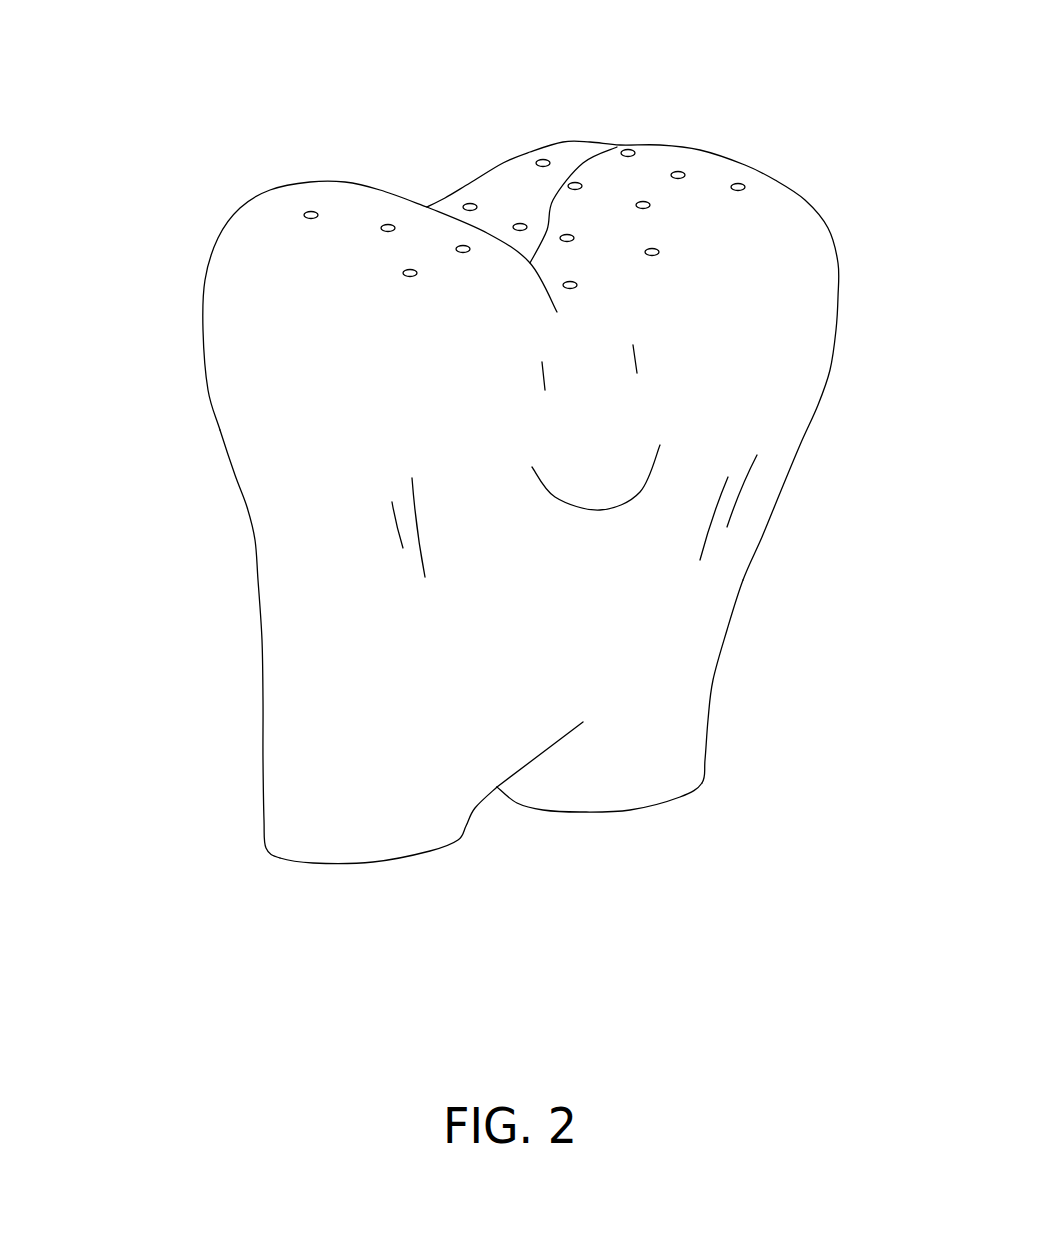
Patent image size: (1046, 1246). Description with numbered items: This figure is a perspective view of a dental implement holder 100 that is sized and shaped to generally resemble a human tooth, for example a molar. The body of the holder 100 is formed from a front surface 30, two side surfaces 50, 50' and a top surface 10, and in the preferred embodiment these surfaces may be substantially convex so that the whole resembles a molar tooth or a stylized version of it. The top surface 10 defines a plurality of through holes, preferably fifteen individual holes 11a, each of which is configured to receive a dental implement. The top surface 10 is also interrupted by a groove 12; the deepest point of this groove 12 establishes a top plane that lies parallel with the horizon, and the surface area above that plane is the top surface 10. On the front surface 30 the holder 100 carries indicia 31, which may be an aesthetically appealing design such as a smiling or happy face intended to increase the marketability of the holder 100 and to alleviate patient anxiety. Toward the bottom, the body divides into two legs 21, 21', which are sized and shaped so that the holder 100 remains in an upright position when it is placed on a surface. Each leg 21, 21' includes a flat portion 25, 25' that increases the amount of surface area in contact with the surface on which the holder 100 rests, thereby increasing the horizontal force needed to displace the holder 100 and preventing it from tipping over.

The dental implement holder 100 is at (145, 213).
The side surface 50 is at (300, 305).
The side surface 50' is at (694, 360).
The top surface 10 is at (567, 152).
The individual holes 11a is at (388, 224).
The groove 12 is at (548, 202).
The leg 21 is at (293, 644).
The leg 21' is at (762, 619).
The flat portion 25 is at (431, 829).
The flat portion 25' is at (599, 828).
The front surface 30 is at (393, 473).
The indicia 31 is at (512, 379).